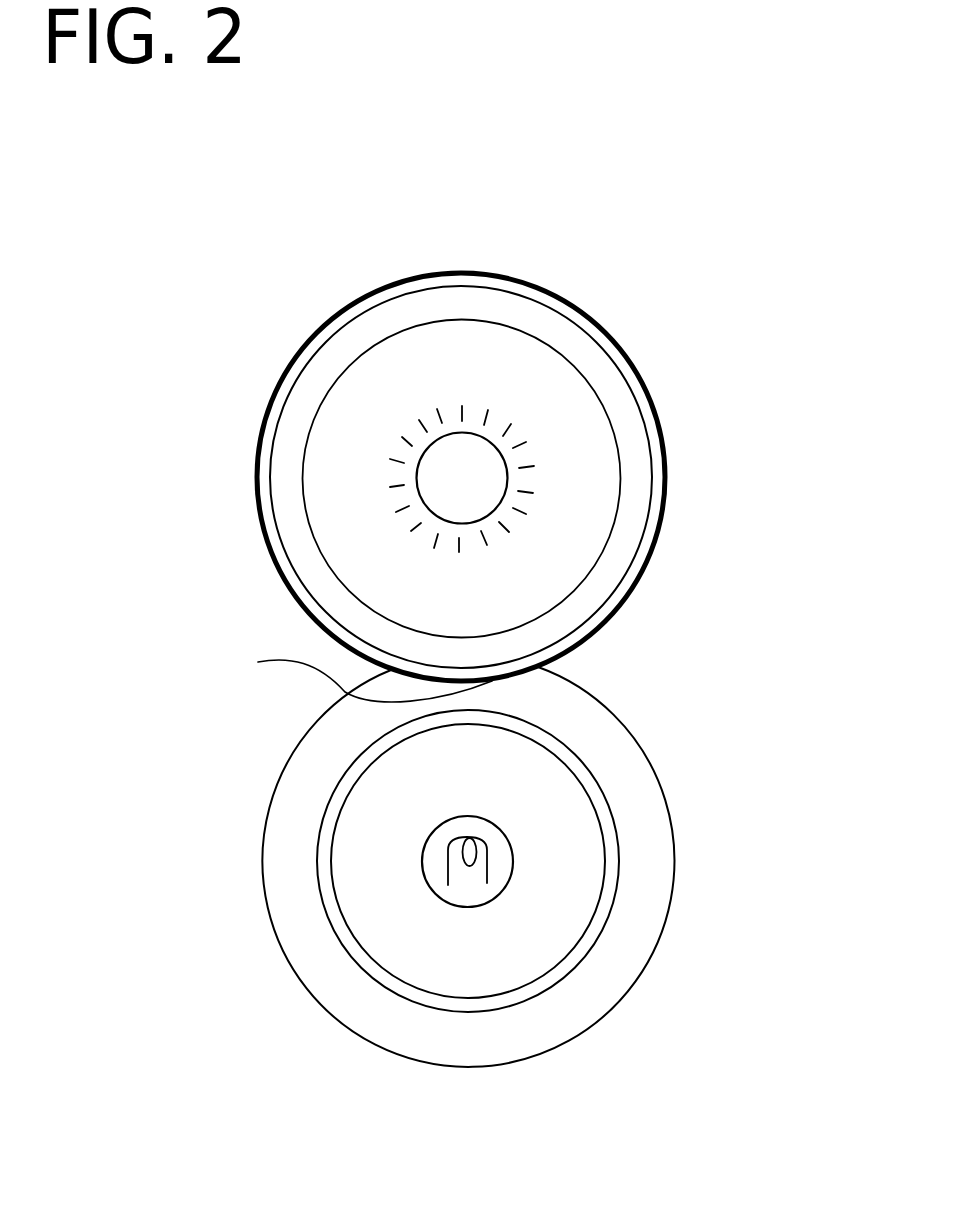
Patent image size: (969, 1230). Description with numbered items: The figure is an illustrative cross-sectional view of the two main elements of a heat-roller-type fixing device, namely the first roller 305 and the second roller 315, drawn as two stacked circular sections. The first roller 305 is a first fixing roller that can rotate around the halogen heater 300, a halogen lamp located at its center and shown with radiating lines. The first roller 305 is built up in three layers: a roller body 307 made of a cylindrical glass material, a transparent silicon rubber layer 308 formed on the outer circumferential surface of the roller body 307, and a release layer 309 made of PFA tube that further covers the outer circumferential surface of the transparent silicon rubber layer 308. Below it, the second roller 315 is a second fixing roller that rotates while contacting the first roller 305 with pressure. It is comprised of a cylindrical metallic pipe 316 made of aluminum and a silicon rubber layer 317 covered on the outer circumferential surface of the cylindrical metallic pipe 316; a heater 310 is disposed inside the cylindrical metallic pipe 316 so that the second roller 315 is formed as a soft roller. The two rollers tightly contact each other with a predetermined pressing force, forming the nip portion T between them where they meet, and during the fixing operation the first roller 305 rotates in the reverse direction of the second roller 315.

The first roller 305 is at (685, 340).
The release layer 309 is at (652, 396).
The transparent silicon rubber layer 308 is at (652, 453).
The roller body 307 is at (630, 505).
The halogen heater 300 is at (480, 518).
The nip portion T is at (358, 673).
The second roller 315 is at (672, 760).
The cylindrical metallic pipe 316 is at (612, 815).
The silicon rubber layer 317 is at (673, 883).
The heater 310 is at (512, 888).